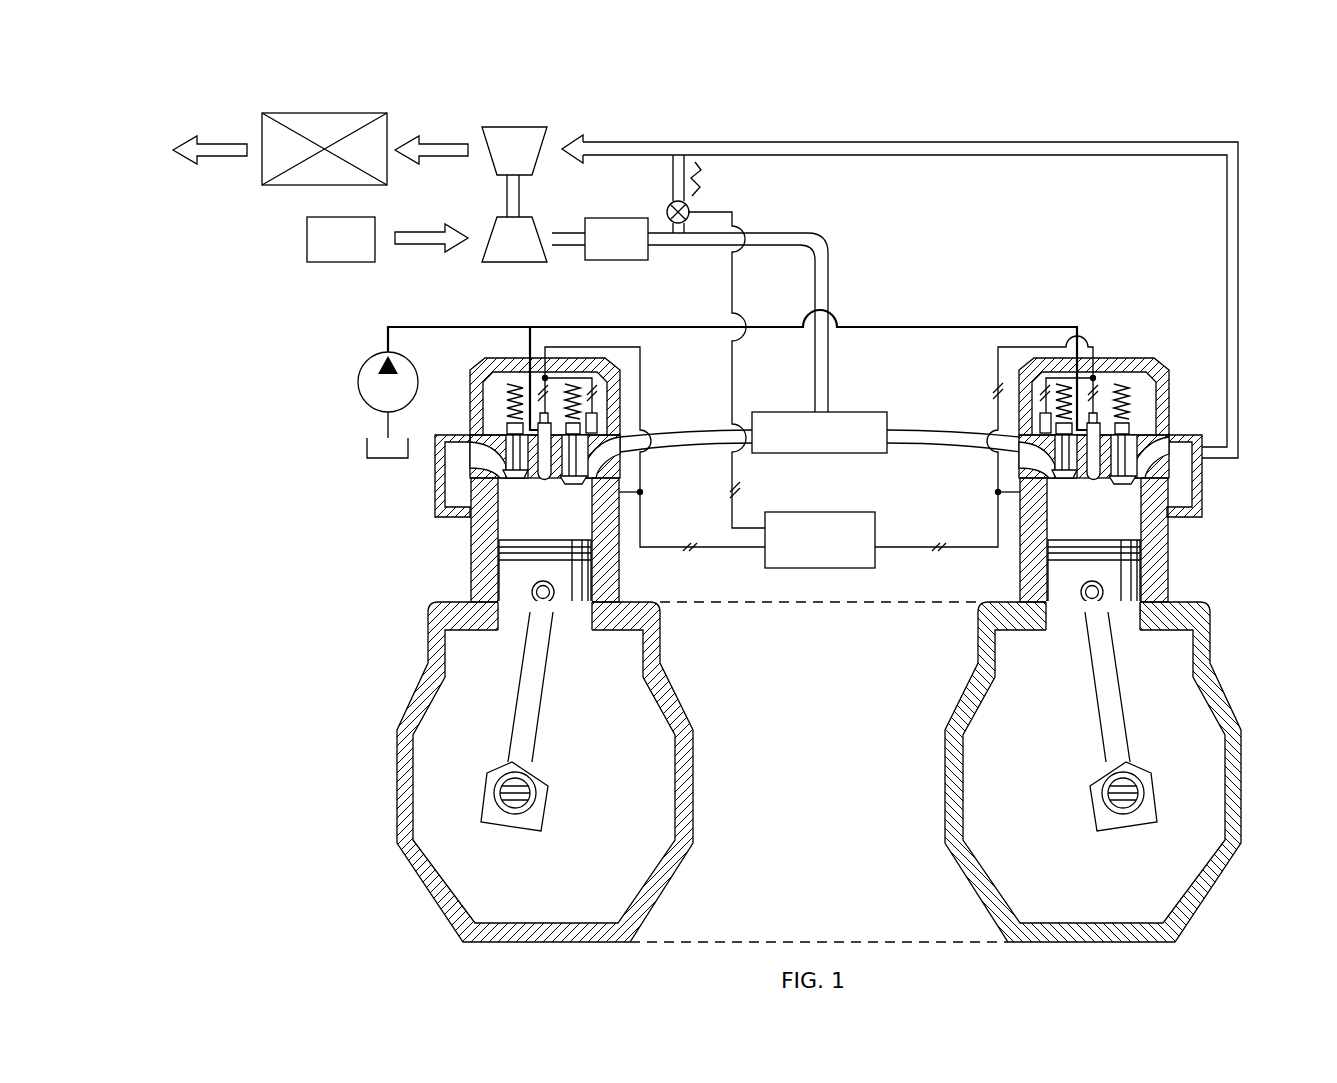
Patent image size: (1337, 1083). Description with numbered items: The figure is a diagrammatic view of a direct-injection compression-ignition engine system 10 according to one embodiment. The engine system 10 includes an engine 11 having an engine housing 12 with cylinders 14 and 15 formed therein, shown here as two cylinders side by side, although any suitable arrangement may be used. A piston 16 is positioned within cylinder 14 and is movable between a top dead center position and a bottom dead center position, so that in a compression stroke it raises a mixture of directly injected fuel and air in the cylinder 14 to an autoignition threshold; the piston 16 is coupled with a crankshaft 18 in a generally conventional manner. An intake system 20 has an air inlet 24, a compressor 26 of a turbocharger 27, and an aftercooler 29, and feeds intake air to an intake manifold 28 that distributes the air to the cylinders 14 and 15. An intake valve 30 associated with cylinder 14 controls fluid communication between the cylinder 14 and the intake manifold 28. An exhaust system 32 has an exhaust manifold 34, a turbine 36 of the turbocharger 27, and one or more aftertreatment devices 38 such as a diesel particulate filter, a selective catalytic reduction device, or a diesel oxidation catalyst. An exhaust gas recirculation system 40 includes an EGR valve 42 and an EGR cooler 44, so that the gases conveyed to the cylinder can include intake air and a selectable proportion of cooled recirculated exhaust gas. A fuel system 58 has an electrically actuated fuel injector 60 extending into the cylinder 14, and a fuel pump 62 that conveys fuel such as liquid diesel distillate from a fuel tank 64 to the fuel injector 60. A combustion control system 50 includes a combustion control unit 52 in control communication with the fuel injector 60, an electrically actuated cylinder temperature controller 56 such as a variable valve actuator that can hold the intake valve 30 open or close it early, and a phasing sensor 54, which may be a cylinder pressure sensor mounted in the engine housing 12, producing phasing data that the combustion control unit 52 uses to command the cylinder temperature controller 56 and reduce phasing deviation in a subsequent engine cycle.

The direct-injection compression-ignition engine system 10 is at (1294, 146).
The engine 11 is at (1252, 703).
The engine housing 12 is at (1213, 650).
The cylinder 14 is at (1128, 500).
The cylinder 15 is at (502, 524).
The piston 16 is at (1068, 598).
The crankshaft 18 is at (1118, 808).
The intake system 20 is at (304, 288).
The air inlet 24 is at (340, 262).
The compressor 26 is at (517, 262).
The turbocharger 27 is at (468, 261).
The intake manifold 28 is at (853, 412).
The aftercooler 29 is at (612, 260).
The intake valve 30 is at (1062, 478).
The exhaust system 32 is at (402, 94).
The exhaust manifold 34 is at (435, 492).
The turbine 36 is at (512, 127).
The aftertreatment device 38 is at (320, 113).
The exhaust gas recirculation system 40 is at (746, 202).
The EGR valve 42 is at (667, 212).
The EGR cooler 44 is at (697, 186).
The combustion control system 50 is at (747, 581).
The combustion control unit 52 is at (853, 512).
The phasing sensor 54 is at (1035, 500).
The cylinder temperature controller 56 is at (1033, 413).
The fuel system 58 is at (333, 414).
The fuel injector 60 is at (1104, 422).
The fuel pump 62 is at (358, 376).
The fuel tank 64 is at (367, 446).